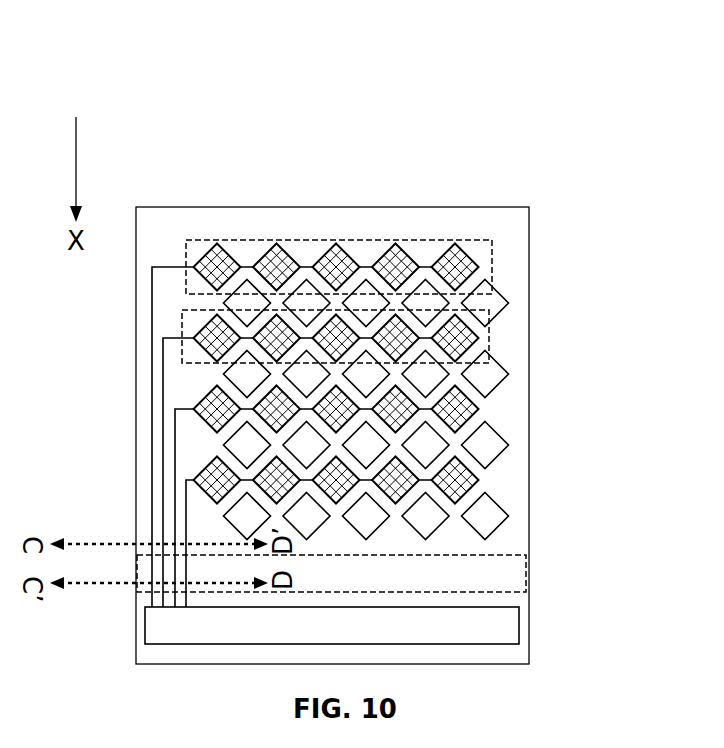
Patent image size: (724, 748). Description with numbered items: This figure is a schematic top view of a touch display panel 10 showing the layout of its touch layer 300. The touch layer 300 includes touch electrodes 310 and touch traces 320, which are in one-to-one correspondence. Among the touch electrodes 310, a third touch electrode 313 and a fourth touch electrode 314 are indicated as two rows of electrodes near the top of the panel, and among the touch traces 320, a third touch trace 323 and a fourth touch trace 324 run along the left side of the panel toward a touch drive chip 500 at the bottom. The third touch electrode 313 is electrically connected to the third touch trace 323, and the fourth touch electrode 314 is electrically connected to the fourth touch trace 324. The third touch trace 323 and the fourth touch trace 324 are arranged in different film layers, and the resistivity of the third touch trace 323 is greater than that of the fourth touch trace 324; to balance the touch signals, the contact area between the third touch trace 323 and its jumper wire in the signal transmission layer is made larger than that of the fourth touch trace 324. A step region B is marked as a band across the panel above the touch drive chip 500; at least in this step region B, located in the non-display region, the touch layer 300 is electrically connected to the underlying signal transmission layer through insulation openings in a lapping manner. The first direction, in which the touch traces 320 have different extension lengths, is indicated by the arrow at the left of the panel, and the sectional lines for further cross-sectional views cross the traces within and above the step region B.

The touch display panel 10 is at (124, 49).
The touch layer 300 is at (182, 79).
The touch electrodes 310 is at (336, 162).
The third touch electrode 313 is at (588, 263).
The fourth touch electrode 314 is at (588, 334).
The touch traces 320 is at (492, 79).
The third touch trace 323 is at (83, 304).
The fourth touch trace 324 is at (92, 397).
The step region B is at (516, 570).
The touch drive chip 500 is at (519, 620).